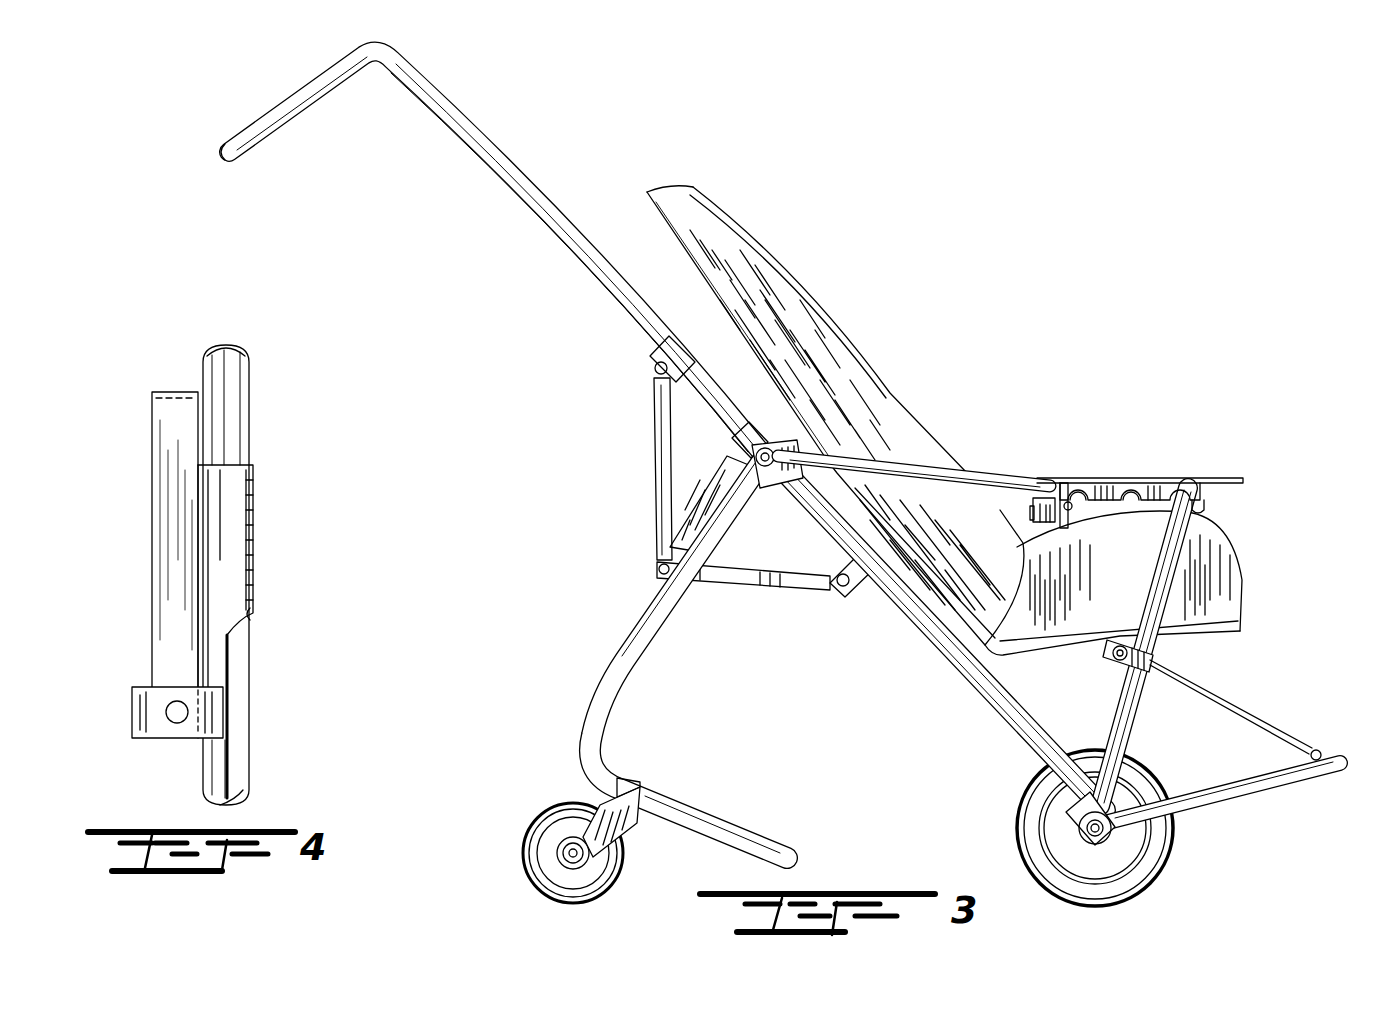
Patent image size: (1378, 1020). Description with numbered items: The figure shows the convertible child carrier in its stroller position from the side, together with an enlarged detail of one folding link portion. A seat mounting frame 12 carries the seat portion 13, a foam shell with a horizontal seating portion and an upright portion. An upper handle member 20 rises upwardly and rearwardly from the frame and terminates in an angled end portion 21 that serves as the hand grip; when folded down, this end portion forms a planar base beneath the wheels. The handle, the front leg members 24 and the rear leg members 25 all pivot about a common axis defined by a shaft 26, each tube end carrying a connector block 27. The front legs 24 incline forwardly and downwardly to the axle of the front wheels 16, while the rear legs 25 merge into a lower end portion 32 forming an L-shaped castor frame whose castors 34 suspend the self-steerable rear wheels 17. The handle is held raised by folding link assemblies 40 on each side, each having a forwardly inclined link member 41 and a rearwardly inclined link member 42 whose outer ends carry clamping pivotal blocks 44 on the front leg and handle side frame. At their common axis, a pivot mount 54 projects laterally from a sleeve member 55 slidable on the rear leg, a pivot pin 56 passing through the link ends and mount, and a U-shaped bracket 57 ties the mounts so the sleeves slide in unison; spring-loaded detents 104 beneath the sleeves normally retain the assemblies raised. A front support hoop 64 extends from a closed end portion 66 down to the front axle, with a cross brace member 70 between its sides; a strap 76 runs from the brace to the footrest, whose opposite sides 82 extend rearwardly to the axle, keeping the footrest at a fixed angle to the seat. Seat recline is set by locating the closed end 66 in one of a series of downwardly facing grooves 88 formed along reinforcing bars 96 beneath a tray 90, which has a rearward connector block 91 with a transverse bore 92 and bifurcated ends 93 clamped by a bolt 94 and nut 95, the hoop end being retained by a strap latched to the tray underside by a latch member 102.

In FIG. 3, the seat mounting frame 12 is at (943, 458).
In FIG. 3, the seat portion 13 is at (793, 255).
In FIG. 3, the front wheels 16 is at (1160, 880).
In FIG. 3, the rear wheels 17 is at (601, 878).
In FIG. 3, the upper handle member 20 is at (466, 89).
In FIG. 3, the angled end portion 21 is at (220, 153).
In FIG. 3, the front leg members 24 is at (964, 690).
In FIG. 3, the rear leg members 25 is at (605, 690).
In FIG. 4, the rear leg members 25 is at (252, 762).
In FIG. 3, the shaft 26 is at (772, 448).
In FIG. 3, the connector blocks 27 is at (1112, 834).
In FIG. 3, the lower end portion 32 is at (762, 843).
In FIG. 3, the castors 34 is at (622, 826).
In FIG. 3, the folding link assemblies 40 is at (657, 569).
In FIG. 3, the link members 41 is at (651, 438).
In FIG. 3, the link members 42 is at (766, 585).
In FIG. 3, the pivotal blocks 44 is at (655, 368).
In FIG. 4, the pivot mount 54 is at (180, 740).
In FIG. 4, the sleeve member 55 is at (253, 512).
In FIG. 4, the pivot pin 56 is at (168, 710).
In FIG. 3, the U-shaped bracket 57 is at (690, 518).
In FIG. 4, the U-shaped bracket 57 is at (152, 526).
In FIG. 3, the front support hoop 64 is at (1147, 713).
In FIG. 3, the closed end portion 66 is at (1205, 492).
In FIG. 3, the cross brace member 70 is at (1130, 645).
In FIG. 3, the strap 76 is at (1248, 714).
In FIG. 3, the opposite sides 82 is at (1283, 786).
In FIG. 3, the grooves 88 is at (1080, 486).
In FIG. 3, the tray 90 is at (1148, 480).
In FIG. 3, the connector block 91 is at (1022, 528).
In FIG. 3, the transverse bore 92 is at (1048, 492).
In FIG. 3, the bifurcated ends 93 is at (1050, 525).
In FIG. 3, the bolt 94 is at (1070, 508).
In FIG. 3, the nut 95 is at (1030, 512).
In FIG. 3, the reinforcing bars 96 is at (1163, 490).
In FIG. 3, the latch member 102 is at (1202, 512).
In FIG. 4, the spring-loaded detents 104 is at (252, 614).